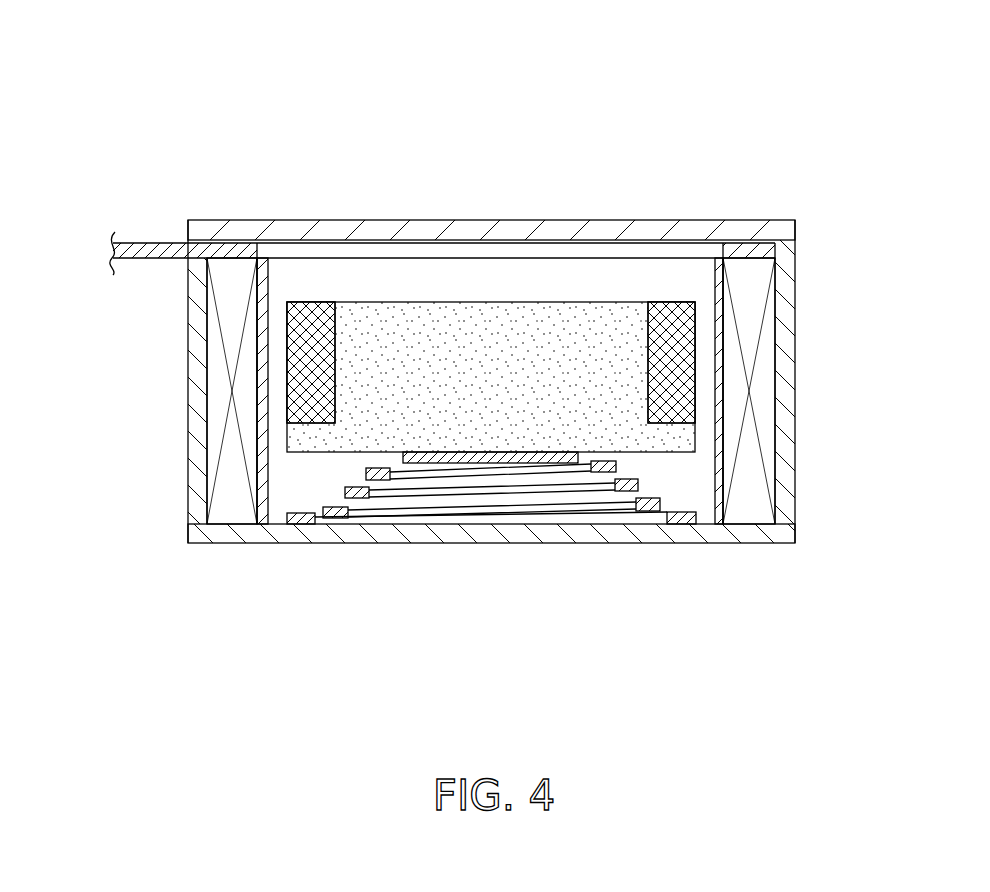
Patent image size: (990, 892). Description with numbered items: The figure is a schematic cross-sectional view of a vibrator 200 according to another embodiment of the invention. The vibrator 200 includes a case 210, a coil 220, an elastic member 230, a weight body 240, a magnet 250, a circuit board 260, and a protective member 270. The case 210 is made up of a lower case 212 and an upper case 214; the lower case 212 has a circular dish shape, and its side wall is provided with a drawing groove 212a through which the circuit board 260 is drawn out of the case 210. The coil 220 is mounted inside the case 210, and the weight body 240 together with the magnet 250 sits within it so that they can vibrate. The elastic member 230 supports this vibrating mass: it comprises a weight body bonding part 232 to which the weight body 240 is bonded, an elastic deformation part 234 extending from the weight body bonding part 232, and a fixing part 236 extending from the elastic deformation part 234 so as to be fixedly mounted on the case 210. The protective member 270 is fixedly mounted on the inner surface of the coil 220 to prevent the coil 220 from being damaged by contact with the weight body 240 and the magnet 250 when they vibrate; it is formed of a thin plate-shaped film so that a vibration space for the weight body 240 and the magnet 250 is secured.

The vibrator 200 is at (758, 16).
The case 210 is at (917, 235).
The lower case 212 is at (787, 312).
The drawing groove 212a is at (207, 251).
The upper case 214 is at (785, 229).
The coil 220 is at (230, 477).
The elastic member 230 is at (303, 702).
The weight body bonding part 232 is at (465, 453).
The elastic deformation part 234 is at (360, 493).
The fixing part 236 is at (303, 524).
The weight body 240 is at (497, 348).
The magnet 250 is at (313, 327).
The circuit board 260 is at (143, 250).
The protective member 270 is at (715, 292).